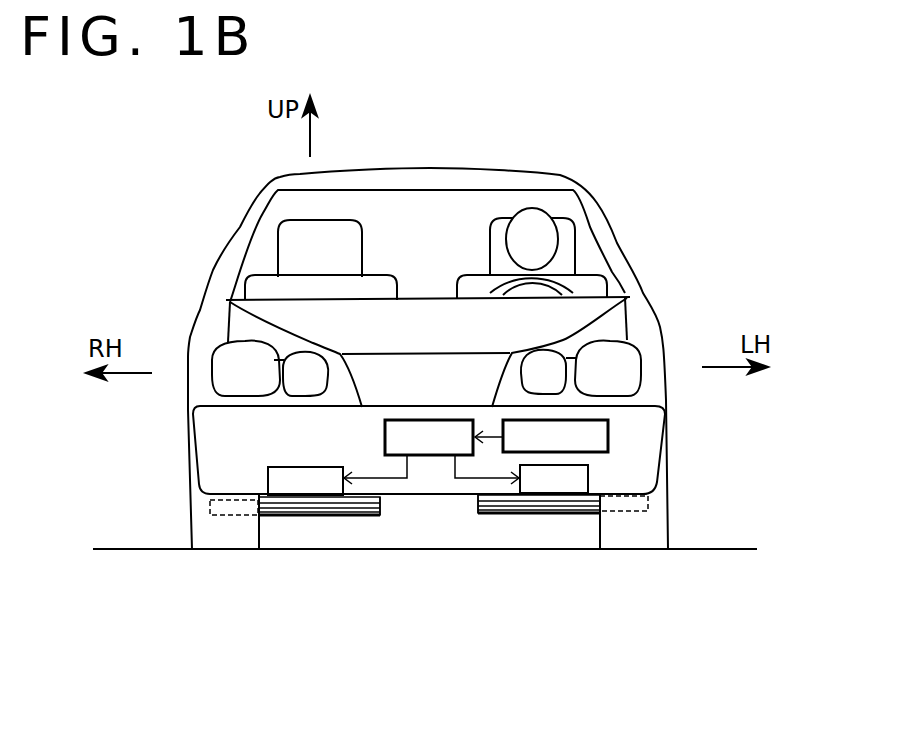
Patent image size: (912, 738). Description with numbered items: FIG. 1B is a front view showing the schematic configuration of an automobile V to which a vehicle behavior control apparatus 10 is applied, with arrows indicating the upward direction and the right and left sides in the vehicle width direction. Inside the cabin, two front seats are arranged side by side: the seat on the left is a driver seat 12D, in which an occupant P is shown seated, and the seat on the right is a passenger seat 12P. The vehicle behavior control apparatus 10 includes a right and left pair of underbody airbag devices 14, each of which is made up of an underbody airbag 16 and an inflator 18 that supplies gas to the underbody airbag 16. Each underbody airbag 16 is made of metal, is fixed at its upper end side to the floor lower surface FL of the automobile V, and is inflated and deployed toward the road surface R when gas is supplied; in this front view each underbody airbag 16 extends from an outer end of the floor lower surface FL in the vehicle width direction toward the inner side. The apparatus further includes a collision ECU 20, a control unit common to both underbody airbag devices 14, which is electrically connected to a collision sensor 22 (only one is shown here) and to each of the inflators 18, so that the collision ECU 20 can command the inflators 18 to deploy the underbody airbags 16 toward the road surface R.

The automobile V is at (613, 185).
The occupant (driver) P is at (563, 235).
The vehicle behavior control apparatus 10 is at (614, 458).
The passenger seat 12P is at (327, 215).
The driver seat 12D is at (498, 215).
The underbody airbag device 14 is at (307, 527).
The underbody airbag 16 is at (387, 507).
The inflator 18 is at (287, 467).
The collision ECU 20 is at (420, 420).
The collision sensor 22 is at (609, 434).
The floor lower surface FL is at (407, 496).
The road surface R is at (495, 549).